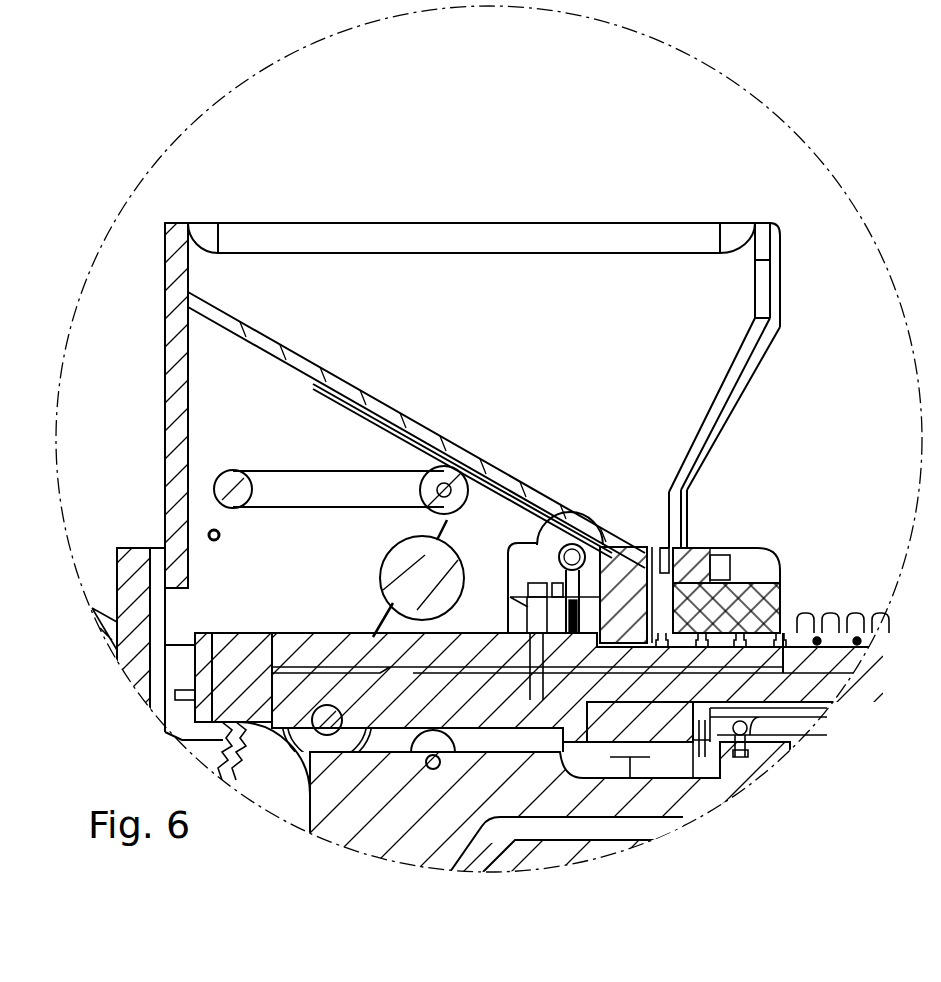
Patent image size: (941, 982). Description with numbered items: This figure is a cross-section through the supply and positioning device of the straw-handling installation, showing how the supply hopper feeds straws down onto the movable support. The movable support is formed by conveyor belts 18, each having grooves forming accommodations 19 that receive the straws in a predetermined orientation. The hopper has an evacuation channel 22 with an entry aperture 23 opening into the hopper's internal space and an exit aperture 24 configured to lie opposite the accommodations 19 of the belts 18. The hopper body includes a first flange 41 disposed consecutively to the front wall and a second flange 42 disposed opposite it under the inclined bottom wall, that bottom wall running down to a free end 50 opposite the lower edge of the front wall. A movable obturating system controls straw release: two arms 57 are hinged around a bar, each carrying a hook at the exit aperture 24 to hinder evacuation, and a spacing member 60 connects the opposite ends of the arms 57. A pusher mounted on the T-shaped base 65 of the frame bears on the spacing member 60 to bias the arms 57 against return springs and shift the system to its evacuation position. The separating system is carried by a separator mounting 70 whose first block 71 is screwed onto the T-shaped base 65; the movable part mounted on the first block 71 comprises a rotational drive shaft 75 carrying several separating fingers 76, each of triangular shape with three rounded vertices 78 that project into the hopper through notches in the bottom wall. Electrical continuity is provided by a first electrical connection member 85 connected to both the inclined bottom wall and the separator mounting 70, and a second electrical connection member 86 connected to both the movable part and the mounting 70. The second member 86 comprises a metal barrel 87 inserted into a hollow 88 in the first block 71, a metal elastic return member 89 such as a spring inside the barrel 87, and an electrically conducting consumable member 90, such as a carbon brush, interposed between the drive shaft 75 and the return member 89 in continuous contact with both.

The conveyor belt 18 is at (792, 630).
The accommodation 19 is at (750, 623).
The evacuation channel 22 is at (690, 548).
The entry aperture 23 is at (623, 524).
The exit aperture 24 is at (645, 640).
The first flange 41 is at (715, 580).
The second flange 42 is at (640, 730).
The free end 50 is at (660, 550).
The arm 57 is at (298, 470).
The spacing member 60 is at (233, 470).
The T-shaped base 65 is at (340, 735).
The separator mounting 70 is at (382, 568).
The first block 71 is at (506, 610).
The rotational drive shaft 75 is at (538, 533).
The separating finger 76 is at (598, 543).
The rounded vertex 78 is at (578, 540).
The first electrical connection member 85 is at (563, 543).
The second electrical connection member 86 is at (548, 537).
The metal barrel 87 is at (527, 700).
The hollow 88 is at (547, 635).
The metal elastic return member 89 is at (572, 640).
The electrically conducting consumable member 90 is at (688, 495).